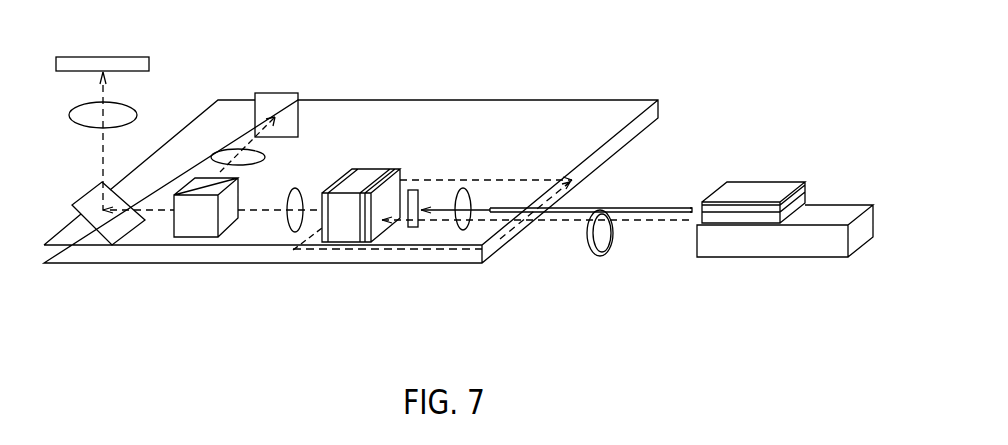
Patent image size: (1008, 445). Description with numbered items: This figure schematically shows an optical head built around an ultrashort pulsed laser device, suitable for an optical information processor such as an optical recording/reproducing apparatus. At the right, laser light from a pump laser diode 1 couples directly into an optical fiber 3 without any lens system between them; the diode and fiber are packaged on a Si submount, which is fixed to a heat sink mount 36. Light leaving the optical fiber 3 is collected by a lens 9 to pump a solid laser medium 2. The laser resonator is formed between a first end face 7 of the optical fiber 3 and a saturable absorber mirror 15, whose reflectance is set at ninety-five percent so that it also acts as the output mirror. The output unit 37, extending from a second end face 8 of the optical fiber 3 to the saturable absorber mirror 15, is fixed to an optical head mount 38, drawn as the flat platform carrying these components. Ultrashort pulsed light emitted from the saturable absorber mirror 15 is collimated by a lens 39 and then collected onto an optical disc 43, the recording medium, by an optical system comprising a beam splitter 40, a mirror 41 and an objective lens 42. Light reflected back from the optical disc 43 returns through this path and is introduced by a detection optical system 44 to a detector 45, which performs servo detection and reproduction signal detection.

The pump laser diode 1 is at (764, 183).
The solid laser medium 2 is at (413, 228).
The optical fiber 3 is at (612, 240).
The first end face 7 is at (697, 208).
The second end face 8 is at (490, 207).
The lens 9 is at (467, 232).
The saturable absorber mirror 15 is at (368, 170).
The heat sink mount 36 is at (795, 257).
The output unit 37 is at (428, 180).
The optical head mount 38 is at (152, 264).
The lens 39 is at (291, 232).
The beam splitter 40 is at (196, 232).
The mirror 41 is at (98, 236).
The objective lens 42 is at (137, 110).
The optical disc 43 is at (122, 56).
The detection optical system 44 is at (240, 147).
The detector 45 is at (278, 93).